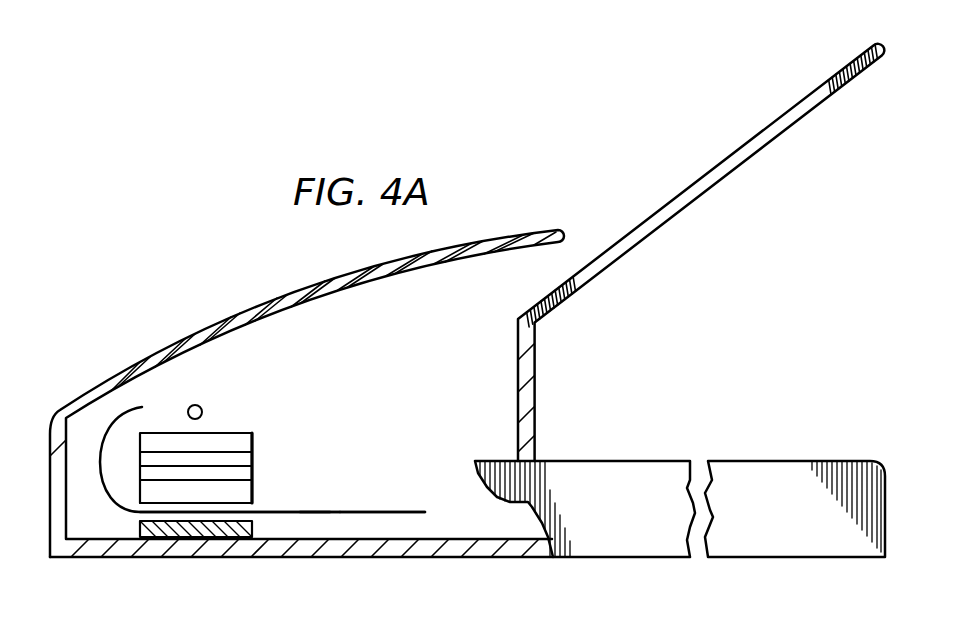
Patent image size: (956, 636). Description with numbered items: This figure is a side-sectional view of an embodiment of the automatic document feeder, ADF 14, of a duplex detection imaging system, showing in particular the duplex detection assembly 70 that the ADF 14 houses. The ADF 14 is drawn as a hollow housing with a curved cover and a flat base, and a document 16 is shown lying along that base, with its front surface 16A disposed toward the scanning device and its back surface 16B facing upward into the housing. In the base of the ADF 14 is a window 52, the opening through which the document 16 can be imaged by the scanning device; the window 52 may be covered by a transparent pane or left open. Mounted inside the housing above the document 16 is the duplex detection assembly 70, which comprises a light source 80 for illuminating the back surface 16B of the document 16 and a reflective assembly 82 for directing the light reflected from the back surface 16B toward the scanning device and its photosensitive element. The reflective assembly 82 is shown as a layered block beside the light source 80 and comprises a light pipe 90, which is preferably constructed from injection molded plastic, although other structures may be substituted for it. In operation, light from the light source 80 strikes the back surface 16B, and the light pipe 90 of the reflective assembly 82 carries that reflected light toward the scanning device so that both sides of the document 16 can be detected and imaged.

The automatic document feeder 14 is at (190, 318).
The document 16 is at (406, 505).
The front surface 16A is at (317, 514).
The back surface 16B is at (352, 510).
The window 52 is at (138, 530).
The duplex detection assembly 70 is at (256, 411).
The light source 80 is at (196, 405).
The reflective assembly 82 is at (258, 452).
The light pipe 90 is at (253, 488).